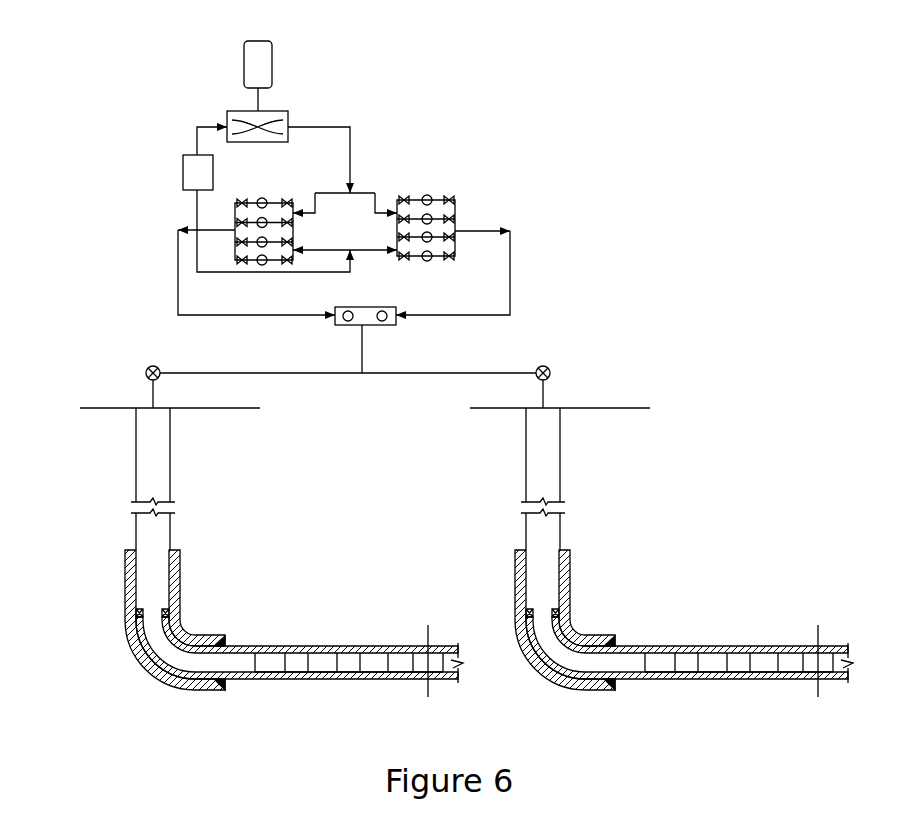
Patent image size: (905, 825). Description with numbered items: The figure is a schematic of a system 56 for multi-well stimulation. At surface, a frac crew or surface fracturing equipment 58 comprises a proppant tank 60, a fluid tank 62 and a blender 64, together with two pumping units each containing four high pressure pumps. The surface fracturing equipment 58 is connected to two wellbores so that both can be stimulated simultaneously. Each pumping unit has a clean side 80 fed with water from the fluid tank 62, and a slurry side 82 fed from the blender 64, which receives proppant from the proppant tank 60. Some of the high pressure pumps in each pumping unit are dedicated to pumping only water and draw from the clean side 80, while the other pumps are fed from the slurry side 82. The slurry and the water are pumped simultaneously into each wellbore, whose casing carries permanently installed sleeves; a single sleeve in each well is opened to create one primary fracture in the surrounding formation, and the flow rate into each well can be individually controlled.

The system 56 is at (357, 218).
The surface fracturing equipment 58 is at (223, 104).
The proppant tank 60 is at (272, 62).
The fluid tank 62 is at (183, 172).
The blender 64 is at (288, 120).
The clean side 80 is at (178, 252).
The slurry side 82 is at (350, 137).